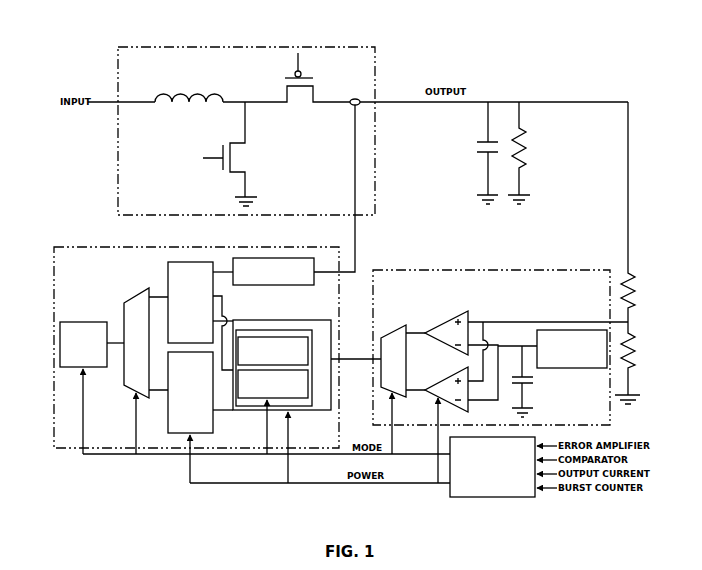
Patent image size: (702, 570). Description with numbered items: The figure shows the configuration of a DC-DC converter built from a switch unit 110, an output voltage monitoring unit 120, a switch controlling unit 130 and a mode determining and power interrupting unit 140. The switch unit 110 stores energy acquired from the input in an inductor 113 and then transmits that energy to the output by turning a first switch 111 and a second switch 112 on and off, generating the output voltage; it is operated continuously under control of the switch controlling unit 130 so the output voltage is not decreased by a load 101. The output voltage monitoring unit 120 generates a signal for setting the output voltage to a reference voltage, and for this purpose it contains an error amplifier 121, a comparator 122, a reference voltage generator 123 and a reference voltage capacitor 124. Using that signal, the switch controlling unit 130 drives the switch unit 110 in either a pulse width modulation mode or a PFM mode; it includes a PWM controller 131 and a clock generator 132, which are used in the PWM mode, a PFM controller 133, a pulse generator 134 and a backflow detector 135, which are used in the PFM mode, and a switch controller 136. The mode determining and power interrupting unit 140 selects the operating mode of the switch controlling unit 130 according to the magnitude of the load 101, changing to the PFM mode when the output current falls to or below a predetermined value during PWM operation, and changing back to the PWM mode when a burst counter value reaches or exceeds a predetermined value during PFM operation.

The load 101 is at (533, 145).
The switch unit 110 is at (254, 46).
The first switch 111 is at (256, 158).
The second switch 112 is at (309, 72).
The inductor 113 is at (211, 85).
The output voltage monitoring unit 120 is at (483, 270).
The error amplifier 121 is at (437, 323).
The comparator 122 is at (432, 397).
The reference voltage generator 123 is at (573, 330).
The reference voltage capacitor 124 is at (537, 380).
The switch controlling unit 130 is at (104, 247).
The PWM controller 131 is at (174, 433).
The clock generator 132 is at (288, 337).
The PFM controller 133 is at (193, 262).
The pulse generator 134 is at (302, 398).
The backflow detector 135 is at (277, 258).
The switch controller 136 is at (83, 322).
The mode determining and power interrupting unit 140 is at (508, 497).